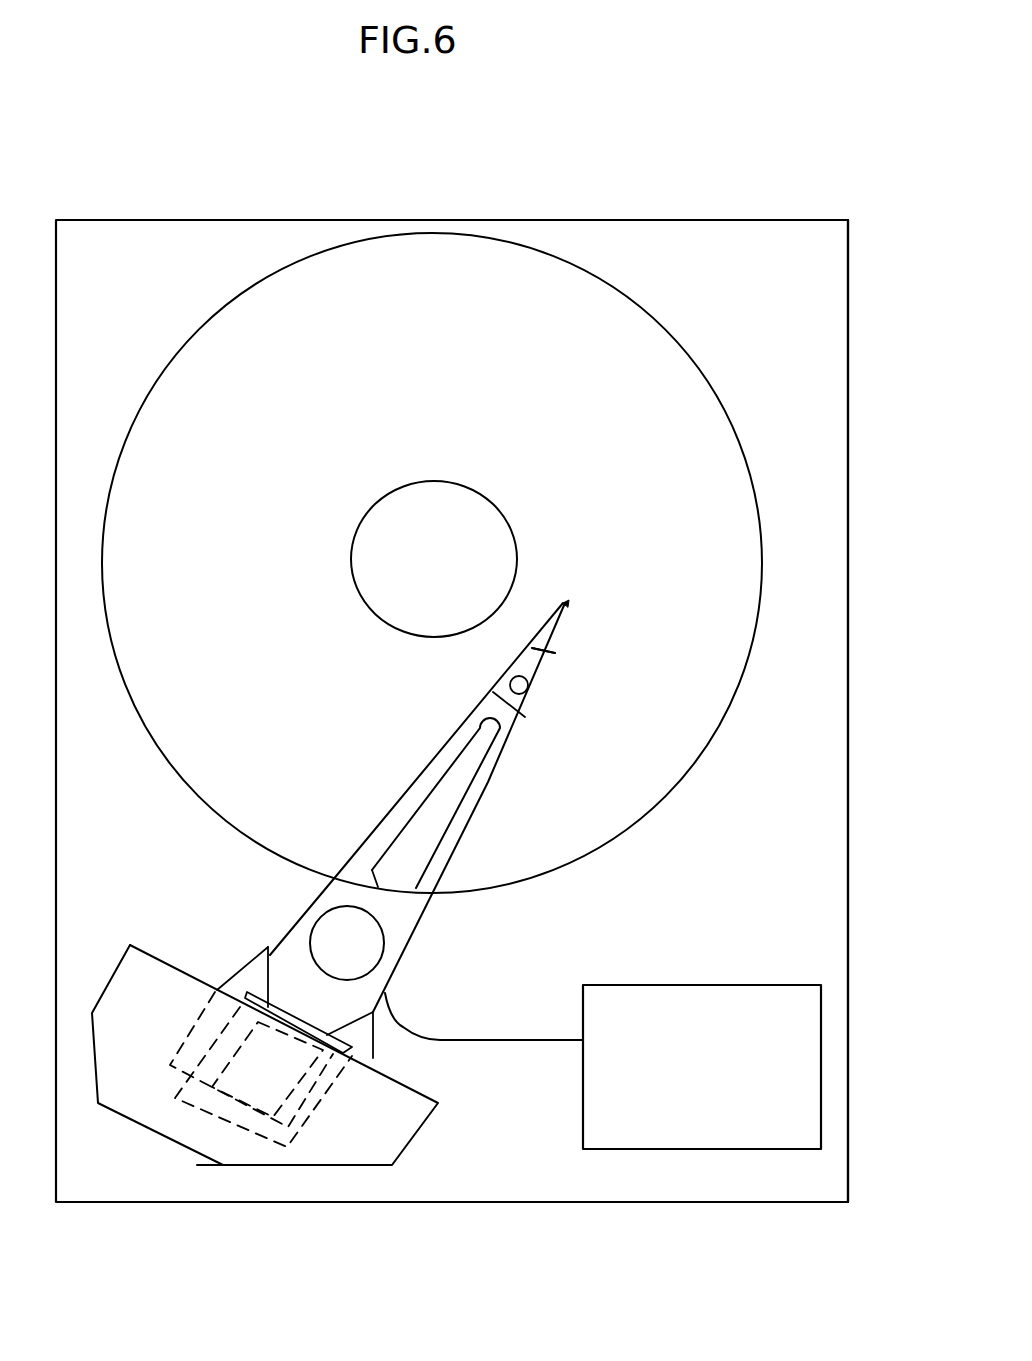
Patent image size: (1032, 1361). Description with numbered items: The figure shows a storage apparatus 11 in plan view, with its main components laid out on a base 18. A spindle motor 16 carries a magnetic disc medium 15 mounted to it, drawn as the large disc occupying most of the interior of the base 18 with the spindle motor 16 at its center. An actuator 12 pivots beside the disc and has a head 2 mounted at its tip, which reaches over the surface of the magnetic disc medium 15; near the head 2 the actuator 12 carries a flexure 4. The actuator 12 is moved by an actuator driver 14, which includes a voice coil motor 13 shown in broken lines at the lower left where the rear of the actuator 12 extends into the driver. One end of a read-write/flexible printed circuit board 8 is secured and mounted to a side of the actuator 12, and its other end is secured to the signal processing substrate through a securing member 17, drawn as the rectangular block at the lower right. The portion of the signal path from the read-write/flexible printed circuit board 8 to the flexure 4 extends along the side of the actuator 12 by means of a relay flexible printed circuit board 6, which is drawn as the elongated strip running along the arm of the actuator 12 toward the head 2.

The head 2 is at (566, 603).
The flexure 4 is at (558, 634).
The relay flexible printed circuit board 6 is at (450, 803).
The read-write/flexible printed circuit board 8 is at (395, 1018).
The storage apparatus 11 is at (718, 220).
The actuator 12 is at (391, 740).
The voice coil motor 13 is at (220, 1110).
The actuator driver 14 is at (167, 963).
The magnetic disc medium 15 is at (672, 365).
The spindle motor 16 is at (460, 503).
The securing member 17 is at (740, 1008).
The base 18 is at (835, 790).